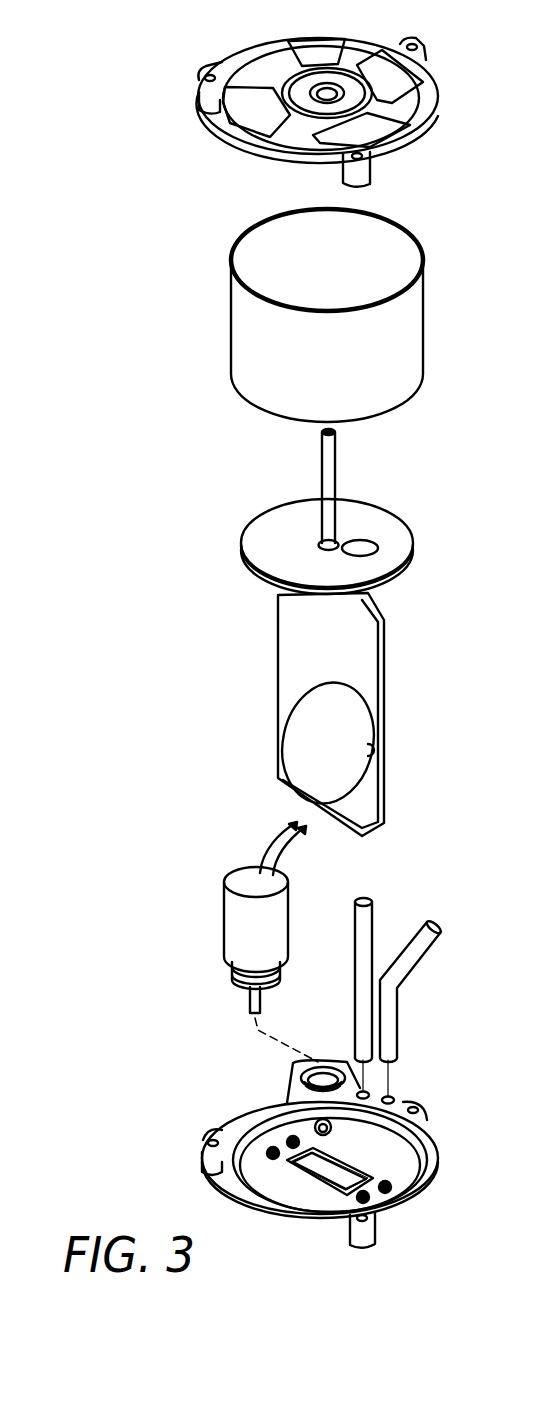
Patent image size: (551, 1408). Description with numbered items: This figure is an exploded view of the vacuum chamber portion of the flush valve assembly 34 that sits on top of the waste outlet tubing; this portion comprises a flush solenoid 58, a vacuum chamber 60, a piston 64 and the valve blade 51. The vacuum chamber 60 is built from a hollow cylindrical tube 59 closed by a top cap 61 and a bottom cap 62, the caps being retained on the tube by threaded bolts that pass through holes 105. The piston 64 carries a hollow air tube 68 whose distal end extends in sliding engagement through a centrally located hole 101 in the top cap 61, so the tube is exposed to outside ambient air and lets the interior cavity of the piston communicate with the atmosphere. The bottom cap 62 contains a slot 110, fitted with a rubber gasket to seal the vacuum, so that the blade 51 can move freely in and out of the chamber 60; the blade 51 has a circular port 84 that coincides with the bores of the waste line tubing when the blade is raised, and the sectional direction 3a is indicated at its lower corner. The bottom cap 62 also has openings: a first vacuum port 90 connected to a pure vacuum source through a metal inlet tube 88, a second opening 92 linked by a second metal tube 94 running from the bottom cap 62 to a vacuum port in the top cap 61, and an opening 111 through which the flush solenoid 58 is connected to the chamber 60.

The flush valve assembly 34 is at (162, 50).
The top cap 61 is at (433, 105).
The centrally located hole 101 is at (325, 92).
The holes 105 is at (417, 46).
The vacuum chamber 60 is at (359, 296).
The hollow cylindrical tube 59 is at (417, 323).
The hollow air tube 68 is at (331, 463).
The piston 64 is at (393, 517).
The valve blade 51 is at (386, 665).
The circular port 84 is at (370, 763).
The section view indicator 3a is at (362, 810).
The flush solenoid 58 is at (227, 918).
The second metal tube 94 is at (375, 917).
The metal inlet tube 88 is at (420, 953).
The bottom cap 62 is at (438, 1160).
The opening 111 is at (303, 1072).
The second opening 92 is at (369, 1094).
The first vacuum port 90 is at (396, 1100).
The slot 110 is at (295, 1157).